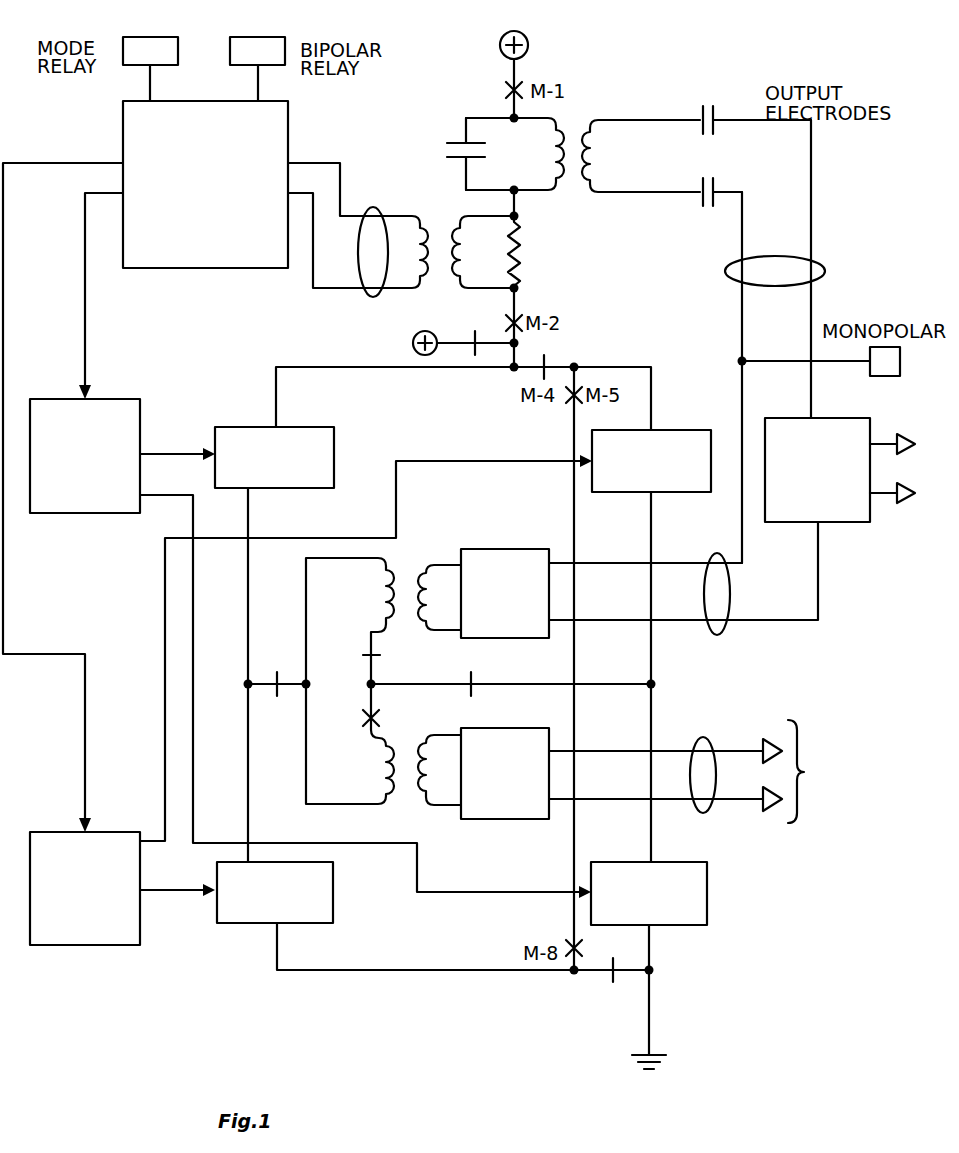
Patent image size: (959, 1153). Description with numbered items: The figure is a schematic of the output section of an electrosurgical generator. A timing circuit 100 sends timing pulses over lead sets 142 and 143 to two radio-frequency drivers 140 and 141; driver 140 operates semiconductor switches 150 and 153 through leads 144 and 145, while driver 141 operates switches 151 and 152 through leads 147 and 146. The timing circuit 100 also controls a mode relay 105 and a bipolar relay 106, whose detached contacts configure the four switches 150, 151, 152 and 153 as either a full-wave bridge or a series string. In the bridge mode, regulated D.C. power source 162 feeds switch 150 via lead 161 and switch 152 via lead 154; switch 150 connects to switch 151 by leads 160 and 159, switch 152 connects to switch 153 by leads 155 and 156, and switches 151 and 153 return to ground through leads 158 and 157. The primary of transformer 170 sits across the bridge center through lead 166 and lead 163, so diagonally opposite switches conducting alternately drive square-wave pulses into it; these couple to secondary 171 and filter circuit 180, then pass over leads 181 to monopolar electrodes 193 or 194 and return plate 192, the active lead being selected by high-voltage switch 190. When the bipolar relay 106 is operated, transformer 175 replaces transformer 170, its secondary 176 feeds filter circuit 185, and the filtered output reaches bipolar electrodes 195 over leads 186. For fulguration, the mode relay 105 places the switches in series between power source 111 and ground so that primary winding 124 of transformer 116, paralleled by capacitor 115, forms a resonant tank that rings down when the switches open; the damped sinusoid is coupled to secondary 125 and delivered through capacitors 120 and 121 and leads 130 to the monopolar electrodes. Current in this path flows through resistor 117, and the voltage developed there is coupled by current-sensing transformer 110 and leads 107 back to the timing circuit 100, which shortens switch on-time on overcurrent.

The timing circuit 100 is at (122, 146).
The mode relay 105 is at (149, 37).
The bipolar relay 106 is at (255, 37).
The leads 107 is at (377, 207).
The transformer 110 is at (443, 226).
The power source 111 is at (508, 33).
The capacitor 115 is at (455, 143).
The transformer 116 is at (583, 131).
The resistor 117 is at (520, 260).
The capacitor 120 is at (722, 112).
The capacitor 121 is at (702, 196).
The primary winding 124 is at (547, 163).
The secondary 125 is at (609, 152).
The leads 130 is at (822, 271).
The radio-frequency driver 140 is at (118, 399).
The radio-frequency driver 141 is at (98, 832).
The lead set 142 is at (88, 360).
The lead set 143 is at (4, 357).
The lead 144 is at (164, 454).
The lead 145 is at (155, 495).
The lead 146 is at (144, 843).
The lead 147 is at (148, 893).
The semiconductor switch 150 is at (313, 427).
The semiconductor switch 151 is at (335, 886).
The semiconductor switch 152 is at (667, 430).
The semiconductor switch 153 is at (660, 862).
The lead 154 is at (610, 367).
The lead 155 is at (651, 590).
The lead 156 is at (653, 716).
The lead 157 is at (651, 950).
The lead 158 is at (455, 973).
The lead 159 is at (249, 787).
The lead 160 is at (249, 633).
The lead 161 is at (468, 368).
The power source 162 is at (414, 346).
The line 163 is at (268, 692).
The lead 166 is at (592, 684).
The transformer 170 is at (350, 621).
The secondary 171 is at (440, 566).
The transformer 175 is at (350, 744).
The secondary 176 is at (440, 737).
The filter circuit 180 is at (503, 549).
The leads 181 is at (722, 630).
The filter circuit 185 is at (500, 728).
The leads 186 is at (705, 742).
The high-voltage switch 190 is at (830, 525).
The return plate 192 is at (870, 374).
The output electrode 193 is at (903, 450).
The output electrode 194 is at (903, 505).
The bipolar electrodes 195 is at (839, 771).